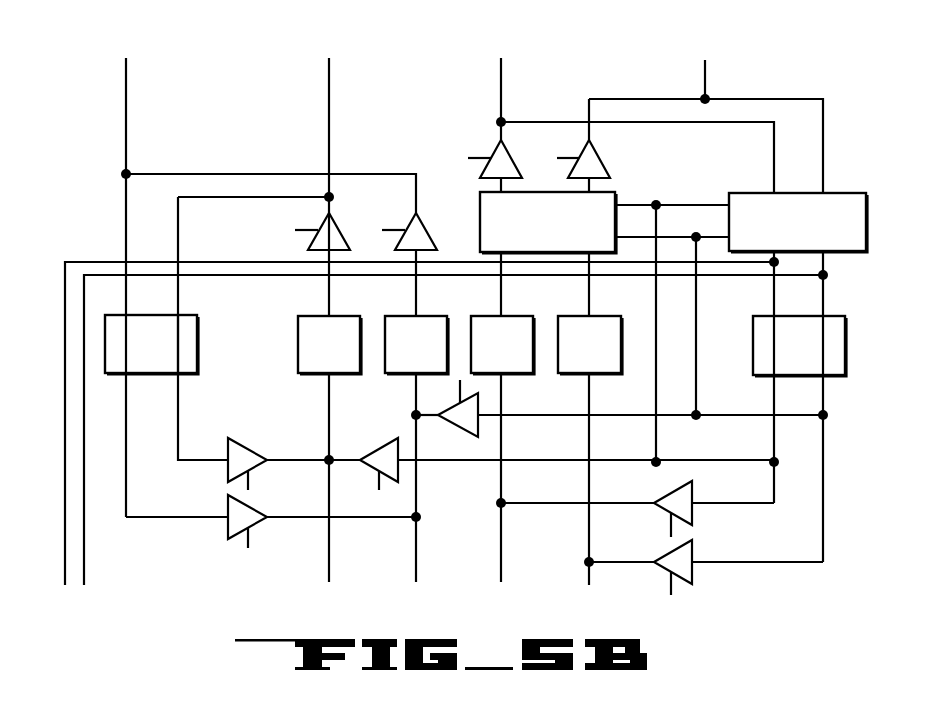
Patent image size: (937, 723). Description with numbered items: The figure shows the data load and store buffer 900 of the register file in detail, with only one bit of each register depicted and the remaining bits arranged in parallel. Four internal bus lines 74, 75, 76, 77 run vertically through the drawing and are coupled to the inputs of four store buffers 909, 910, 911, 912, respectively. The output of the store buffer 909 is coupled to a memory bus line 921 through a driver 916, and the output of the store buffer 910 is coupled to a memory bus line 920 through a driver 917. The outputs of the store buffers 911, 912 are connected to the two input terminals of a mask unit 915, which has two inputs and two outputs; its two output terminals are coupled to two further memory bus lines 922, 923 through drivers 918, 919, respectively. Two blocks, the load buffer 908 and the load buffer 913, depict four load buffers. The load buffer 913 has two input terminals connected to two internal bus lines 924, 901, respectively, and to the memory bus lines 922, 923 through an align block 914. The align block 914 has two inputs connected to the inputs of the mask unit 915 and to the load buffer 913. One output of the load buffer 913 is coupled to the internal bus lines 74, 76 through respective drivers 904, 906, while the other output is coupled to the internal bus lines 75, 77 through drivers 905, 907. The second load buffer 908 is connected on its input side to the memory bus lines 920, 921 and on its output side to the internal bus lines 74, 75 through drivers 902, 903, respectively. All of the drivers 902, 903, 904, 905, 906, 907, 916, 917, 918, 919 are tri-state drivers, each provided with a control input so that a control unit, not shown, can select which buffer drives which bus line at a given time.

The data load and store buffer 900 is at (104, 26).
The internal bus line 901 is at (85, 540).
The internal bus line 924 is at (64, 506).
The memory bus line 920 is at (126, 110).
The memory bus line 921 is at (328, 108).
The memory bus line 922 is at (501, 84).
The memory bus line 923 is at (705, 78).
The driver 916 is at (346, 233).
The driver 917 is at (433, 233).
The driver 918 is at (530, 161).
The driver 919 is at (620, 161).
The mask unit 915 is at (618, 192).
The align block 914 is at (839, 193).
The load buffer 908 is at (197, 338).
The load buffer 913 is at (846, 341).
The store buffer 909 is at (345, 316).
The store buffer 910 is at (432, 316).
The store buffer 911 is at (520, 316).
The store buffer 912 is at (600, 316).
The driver 902 is at (247, 425).
The driver 903 is at (229, 537).
The driver 904 is at (387, 442).
The driver 905 is at (457, 425).
The driver 906 is at (670, 494).
The driver 907 is at (670, 553).
The internal bus line 74 is at (329, 582).
The internal bus line 75 is at (416, 582).
The internal bus line 76 is at (501, 582).
The internal bus line 77 is at (589, 582).